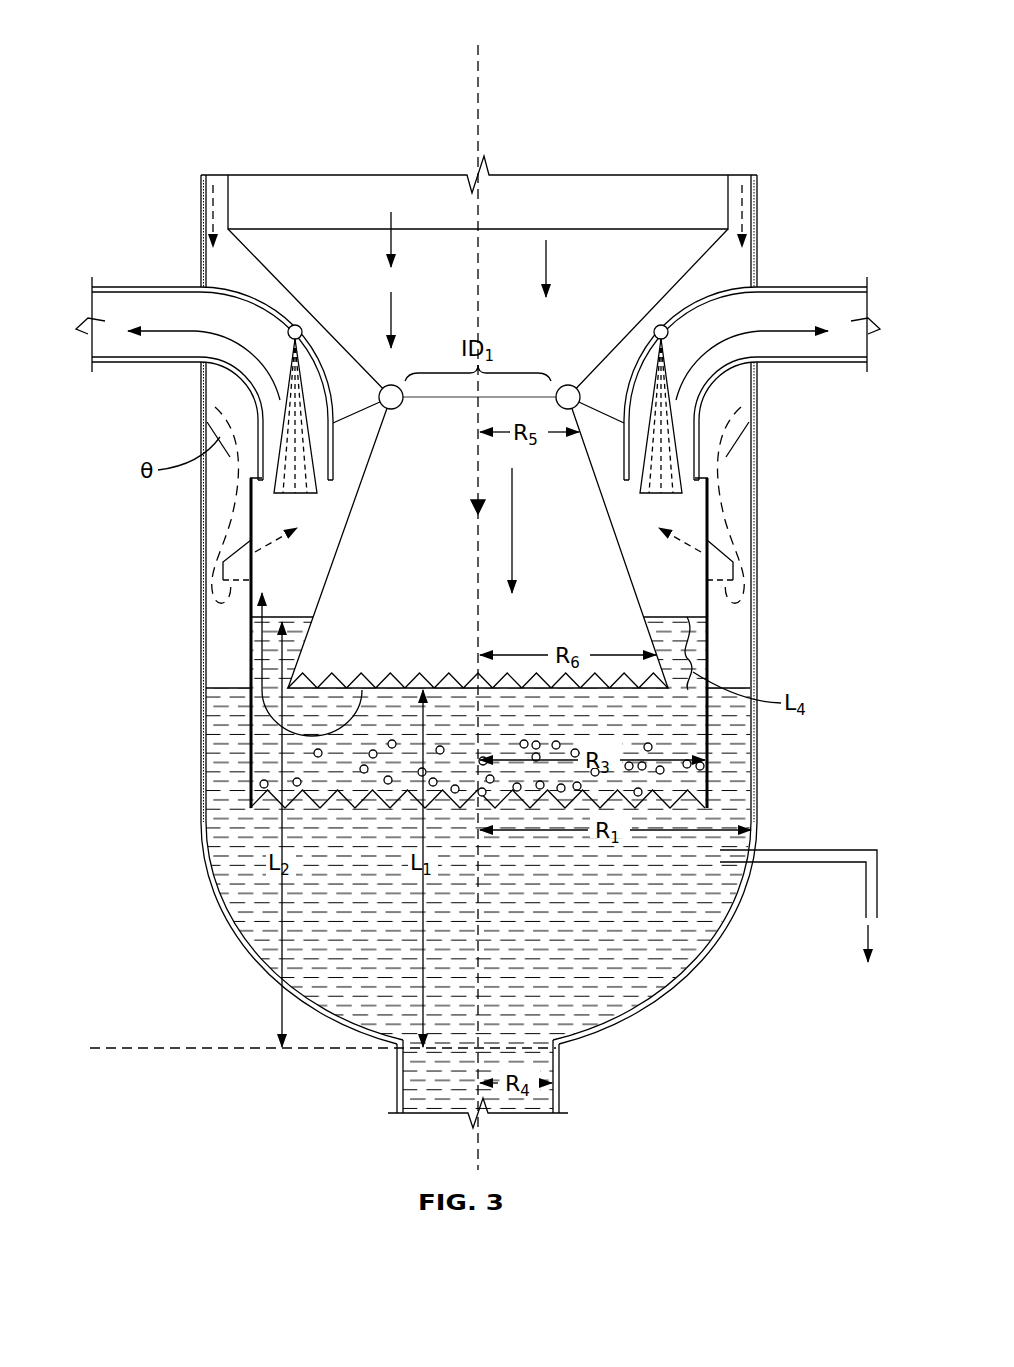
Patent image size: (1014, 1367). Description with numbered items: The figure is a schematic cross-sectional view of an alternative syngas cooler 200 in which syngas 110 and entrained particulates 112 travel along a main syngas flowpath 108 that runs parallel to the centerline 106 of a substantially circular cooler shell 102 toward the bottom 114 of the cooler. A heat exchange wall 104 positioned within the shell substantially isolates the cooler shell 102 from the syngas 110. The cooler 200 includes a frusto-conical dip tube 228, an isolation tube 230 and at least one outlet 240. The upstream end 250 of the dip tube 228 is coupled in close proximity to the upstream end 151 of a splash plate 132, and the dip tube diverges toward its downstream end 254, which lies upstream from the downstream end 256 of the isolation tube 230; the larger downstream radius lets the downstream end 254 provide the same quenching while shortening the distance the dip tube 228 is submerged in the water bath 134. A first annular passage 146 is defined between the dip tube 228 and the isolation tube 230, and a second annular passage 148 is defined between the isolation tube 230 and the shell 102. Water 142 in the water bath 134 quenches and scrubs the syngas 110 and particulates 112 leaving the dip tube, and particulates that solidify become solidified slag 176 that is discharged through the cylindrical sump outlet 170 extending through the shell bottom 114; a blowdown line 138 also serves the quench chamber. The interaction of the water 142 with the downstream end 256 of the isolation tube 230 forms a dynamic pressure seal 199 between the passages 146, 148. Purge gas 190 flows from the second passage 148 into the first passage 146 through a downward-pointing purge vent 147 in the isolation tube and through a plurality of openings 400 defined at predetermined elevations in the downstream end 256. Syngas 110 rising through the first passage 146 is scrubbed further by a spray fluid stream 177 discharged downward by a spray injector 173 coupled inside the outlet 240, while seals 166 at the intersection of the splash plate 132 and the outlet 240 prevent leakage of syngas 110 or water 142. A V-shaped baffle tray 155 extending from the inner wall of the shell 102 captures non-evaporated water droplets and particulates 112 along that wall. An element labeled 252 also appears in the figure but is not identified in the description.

The syngas cooler 200 is at (165, 50).
The cooler shell 102 is at (203, 578).
The heat exchange wall 104 is at (202, 207).
The centerline 106 is at (490, 115).
The main syngas flowpath 108 is at (395, 255).
The syngas 110 is at (395, 310).
The particulates 112 is at (550, 270).
The bottom 114 is at (648, 1015).
The splash plate 132 is at (363, 447).
The water bath 134 is at (240, 880).
The blowdown line 138 is at (812, 850).
The water 142 is at (406, 947).
The first annular passage 146 is at (318, 580).
The purge vent 147 is at (735, 552).
The second annular passage 148 is at (230, 627).
The upstream end of splash plate 151 is at (381, 385).
The baffle tray 155 is at (749, 422).
The seals 166 is at (250, 480).
The sump outlet 170 is at (398, 1075).
The spray injector 173 is at (672, 334).
The solidified slag 176 is at (515, 1037).
The spray fluid stream 177 is at (280, 428).
The purge gas 190 is at (760, 205).
The dynamic pressure seal 199 is at (545, 805).
The dip tube 228 is at (645, 590).
The isolation tube 230 is at (712, 716).
The outlet 240 is at (818, 282).
The upstream end of dip tube 250 is at (378, 445).
The cone strut 252 is at (340, 548).
The downstream end of dip tube 254 is at (296, 676).
The downstream end of isolation tube 256 is at (262, 758).
The openings 400 is at (712, 780).